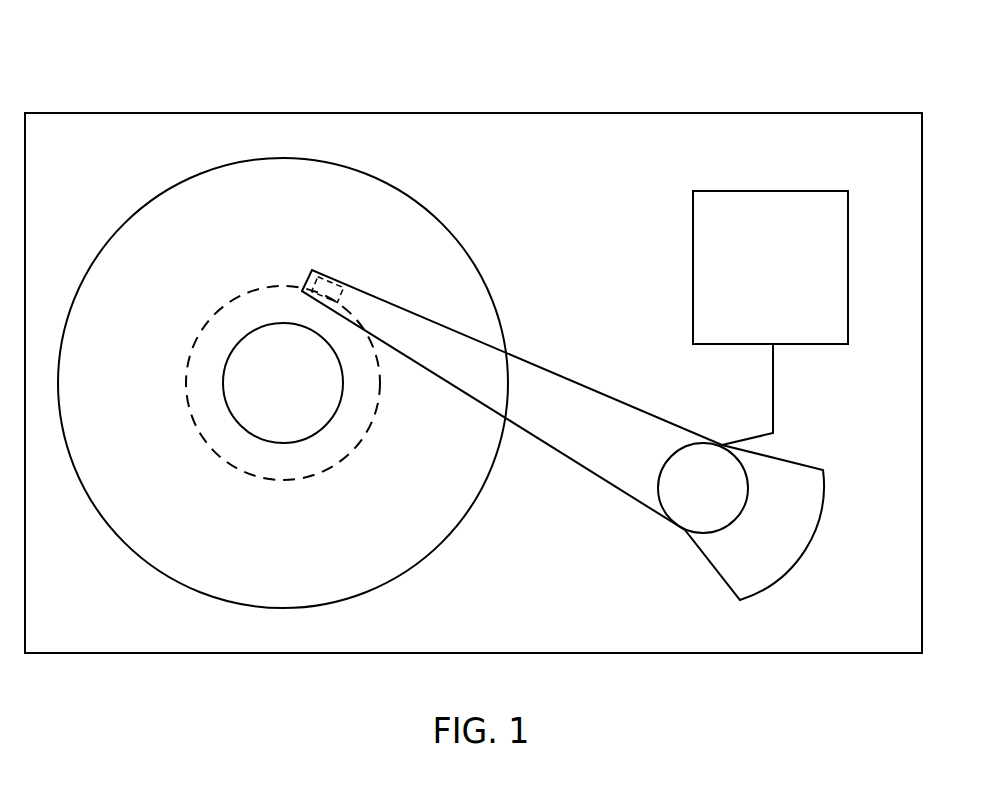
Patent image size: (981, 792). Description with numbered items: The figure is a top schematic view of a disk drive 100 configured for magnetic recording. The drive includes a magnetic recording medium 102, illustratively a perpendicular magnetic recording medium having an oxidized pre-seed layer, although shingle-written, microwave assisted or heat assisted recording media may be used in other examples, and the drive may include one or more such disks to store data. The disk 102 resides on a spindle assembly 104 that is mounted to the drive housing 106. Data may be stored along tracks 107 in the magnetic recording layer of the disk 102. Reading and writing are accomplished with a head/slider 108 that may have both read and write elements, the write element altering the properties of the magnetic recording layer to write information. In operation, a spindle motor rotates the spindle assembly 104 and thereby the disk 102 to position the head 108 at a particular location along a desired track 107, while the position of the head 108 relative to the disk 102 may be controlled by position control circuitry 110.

The disk drive 100 is at (230, 81).
The magnetic recording medium 102 is at (418, 200).
The spindle assembly 104 is at (266, 387).
The drive housing 106 is at (620, 113).
The tracks 107 is at (257, 287).
The head/slider 108 is at (340, 285).
The position control circuitry 110 is at (748, 282).